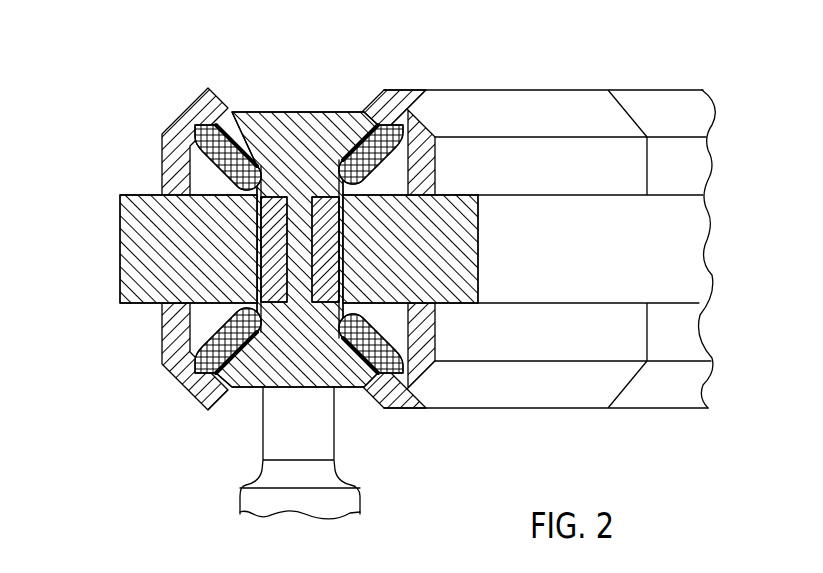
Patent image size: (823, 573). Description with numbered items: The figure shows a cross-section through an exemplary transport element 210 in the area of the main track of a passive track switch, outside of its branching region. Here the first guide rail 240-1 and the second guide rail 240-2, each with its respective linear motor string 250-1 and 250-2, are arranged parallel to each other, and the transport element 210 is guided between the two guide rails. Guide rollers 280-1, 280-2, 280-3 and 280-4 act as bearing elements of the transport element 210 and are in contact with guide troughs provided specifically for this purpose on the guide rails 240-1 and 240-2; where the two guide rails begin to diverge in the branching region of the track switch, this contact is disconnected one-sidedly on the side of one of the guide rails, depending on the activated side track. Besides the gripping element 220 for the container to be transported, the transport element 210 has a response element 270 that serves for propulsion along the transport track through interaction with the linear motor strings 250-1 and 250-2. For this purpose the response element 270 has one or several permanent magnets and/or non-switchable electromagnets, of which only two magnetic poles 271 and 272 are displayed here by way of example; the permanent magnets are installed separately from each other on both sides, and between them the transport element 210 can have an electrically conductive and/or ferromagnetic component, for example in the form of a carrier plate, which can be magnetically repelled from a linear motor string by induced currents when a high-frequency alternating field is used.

The transport element 210 is at (298, 112).
The gripping element 220 is at (268, 445).
The first guide rail 240-1 is at (552, 102).
The second guide rail 240-2 is at (172, 124).
The linear motor string 250-1 is at (453, 284).
The linear motor string 250-2 is at (124, 249).
The response element 270 is at (317, 345).
The magnetic pole 271 is at (272, 205).
The magnetic pole 272 is at (326, 205).
The guide roller 280-1 is at (218, 156).
The guide roller 280-2 is at (362, 103).
The guide roller 280-3 is at (220, 342).
The guide roller 280-4 is at (370, 364).